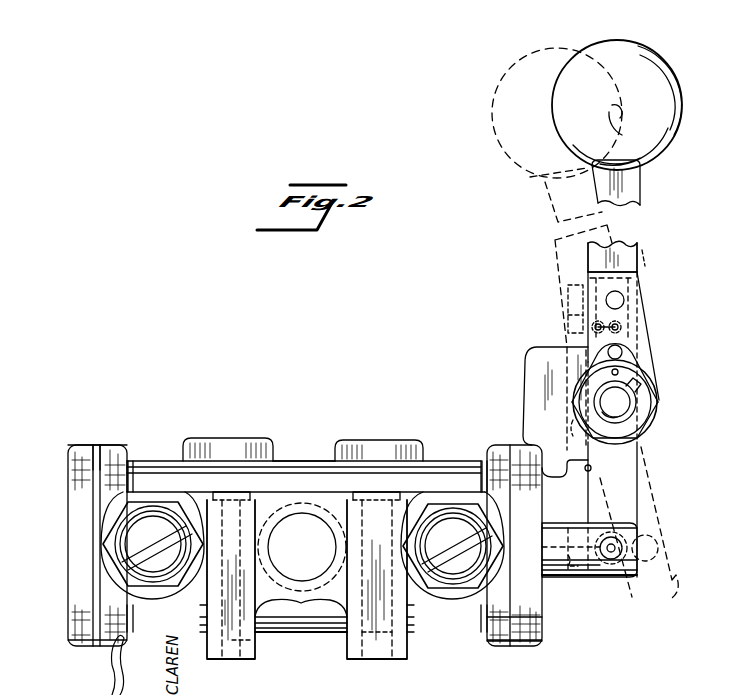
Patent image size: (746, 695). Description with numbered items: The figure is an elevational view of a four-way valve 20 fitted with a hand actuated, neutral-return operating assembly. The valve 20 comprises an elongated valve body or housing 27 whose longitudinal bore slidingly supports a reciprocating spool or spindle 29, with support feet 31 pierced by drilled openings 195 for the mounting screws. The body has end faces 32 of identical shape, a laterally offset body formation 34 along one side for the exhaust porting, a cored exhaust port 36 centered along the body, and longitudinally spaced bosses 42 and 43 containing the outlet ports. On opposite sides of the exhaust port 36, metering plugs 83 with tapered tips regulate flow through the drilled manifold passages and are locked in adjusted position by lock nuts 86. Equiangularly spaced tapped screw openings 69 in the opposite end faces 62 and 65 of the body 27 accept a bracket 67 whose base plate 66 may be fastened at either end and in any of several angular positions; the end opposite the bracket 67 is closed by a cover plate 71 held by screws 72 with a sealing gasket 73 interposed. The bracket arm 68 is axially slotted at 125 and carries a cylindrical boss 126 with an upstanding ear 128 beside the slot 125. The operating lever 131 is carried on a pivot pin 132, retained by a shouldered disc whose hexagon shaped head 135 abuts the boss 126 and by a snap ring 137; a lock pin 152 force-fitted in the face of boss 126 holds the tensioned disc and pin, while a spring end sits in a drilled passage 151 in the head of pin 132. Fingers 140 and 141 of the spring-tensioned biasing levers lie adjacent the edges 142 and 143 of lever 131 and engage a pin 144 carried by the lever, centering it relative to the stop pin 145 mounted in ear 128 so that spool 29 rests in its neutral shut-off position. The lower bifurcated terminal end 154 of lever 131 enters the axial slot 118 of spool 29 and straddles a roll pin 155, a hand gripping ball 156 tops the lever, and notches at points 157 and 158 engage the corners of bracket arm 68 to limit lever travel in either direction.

The valve 20 is at (156, 454).
The valve body 27 is at (300, 460).
The spindle 29 is at (547, 528).
The support feet 31 is at (240, 660).
The end flanges 32 is at (93, 645).
The body formation 34 is at (250, 495).
The exhaust port 36 is at (310, 525).
The boss 42 is at (228, 440).
The boss 43 is at (396, 440).
The end face 62 is at (95, 455).
The end face 65 is at (543, 617).
The base plate 66 is at (530, 645).
The bracket 67 is at (511, 401).
The bracket arm 68 is at (538, 360).
The screw openings 69 is at (118, 445).
The closure plate 71 is at (84, 446).
The screws 72 is at (133, 485).
The sealing gasket 73 is at (101, 455).
The metering plugs 83 is at (168, 562).
The lock nuts 86 is at (207, 548).
The axial slot 118 is at (570, 566).
The slot 125 is at (572, 425).
The cylindrical boss 126 is at (651, 412).
The ear 128 is at (639, 305).
The operating lever 131 is at (636, 200).
The pivot pin 132 is at (618, 404).
The hexagon shaped head 135 is at (642, 392).
The snap ring 137 is at (617, 426).
The finger 140 is at (598, 291).
The finger 141 is at (646, 266).
The edge 142 is at (588, 268).
The edge 143 is at (637, 246).
The pin 144 is at (588, 318).
The stop pin 145 is at (618, 300).
The drilled passage 151 is at (634, 358).
The lock pin 152 is at (624, 347).
The bifurcated terminal end 154 is at (639, 527).
The roll pin 155 is at (611, 537).
The hand gripping ball 156 is at (672, 90).
The notch 157 is at (592, 469).
The notch 158 is at (583, 333).
The drilled openings 195 is at (358, 630).